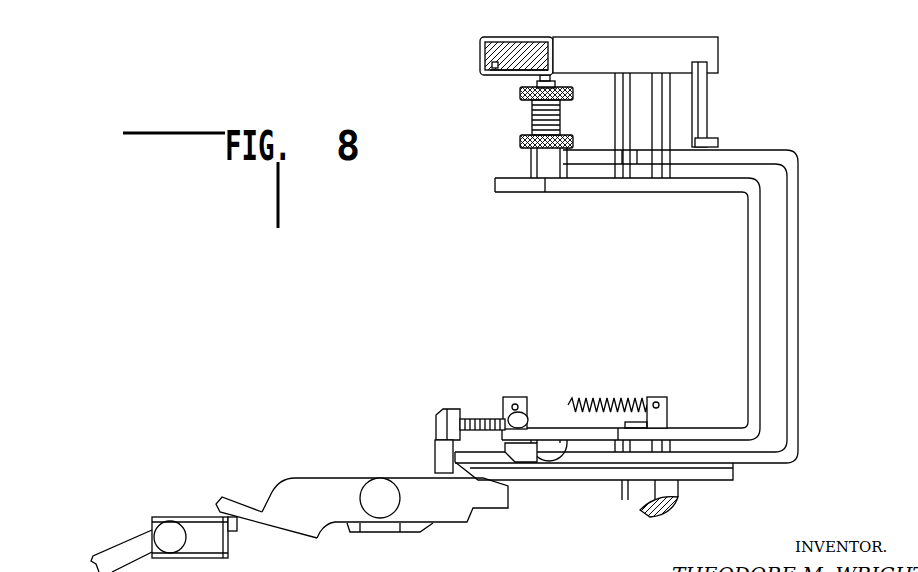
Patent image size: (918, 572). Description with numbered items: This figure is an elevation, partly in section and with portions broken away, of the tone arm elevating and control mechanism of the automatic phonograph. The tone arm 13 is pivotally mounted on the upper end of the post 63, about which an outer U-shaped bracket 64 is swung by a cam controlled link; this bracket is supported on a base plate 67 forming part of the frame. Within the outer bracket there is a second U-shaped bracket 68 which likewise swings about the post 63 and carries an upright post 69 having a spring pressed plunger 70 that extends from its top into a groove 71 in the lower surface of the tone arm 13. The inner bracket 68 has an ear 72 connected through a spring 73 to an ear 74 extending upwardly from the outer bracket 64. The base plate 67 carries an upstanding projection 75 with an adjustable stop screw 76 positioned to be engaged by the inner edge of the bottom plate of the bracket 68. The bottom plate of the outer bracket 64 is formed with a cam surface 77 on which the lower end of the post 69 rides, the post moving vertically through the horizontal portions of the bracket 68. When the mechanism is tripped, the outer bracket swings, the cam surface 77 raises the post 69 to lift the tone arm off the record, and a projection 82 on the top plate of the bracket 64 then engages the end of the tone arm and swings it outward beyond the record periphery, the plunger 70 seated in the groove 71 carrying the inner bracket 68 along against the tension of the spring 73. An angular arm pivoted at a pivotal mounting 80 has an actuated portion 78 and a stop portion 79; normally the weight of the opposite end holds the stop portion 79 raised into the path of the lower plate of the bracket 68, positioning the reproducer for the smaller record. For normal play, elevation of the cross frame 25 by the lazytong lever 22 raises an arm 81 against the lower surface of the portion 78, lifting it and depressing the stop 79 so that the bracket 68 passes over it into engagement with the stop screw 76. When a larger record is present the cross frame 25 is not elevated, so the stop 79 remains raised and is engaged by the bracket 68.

The tone arm 13 is at (590, 47).
The lazytong lever 22 is at (120, 552).
The cross frame 25 is at (183, 515).
The post 63 is at (662, 332).
The U-shaped bracket 64 is at (795, 217).
The base plate 67 is at (697, 472).
The second U-shaped bracket 68 is at (755, 275).
The upright post 69 is at (540, 268).
The spring pressed plunger 70 is at (545, 37).
The groove 71 is at (495, 70).
The ear 72 is at (667, 417).
The spring 73 is at (597, 398).
The ear 74 is at (510, 397).
The upstanding projection 75 is at (447, 445).
The adjustable stop screw 76 is at (502, 422).
The cam surface 77 is at (527, 462).
The actuated portion 78 is at (228, 503).
The stop portion 79 is at (490, 500).
The pivotal mounting 80 is at (368, 483).
The arm 81 is at (237, 532).
The projection 82 is at (706, 108).